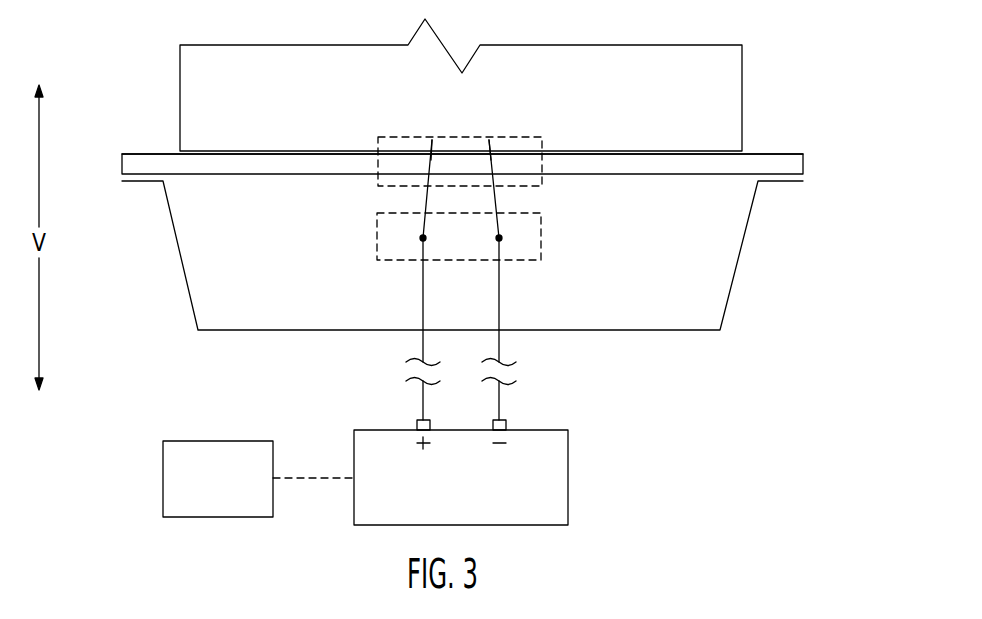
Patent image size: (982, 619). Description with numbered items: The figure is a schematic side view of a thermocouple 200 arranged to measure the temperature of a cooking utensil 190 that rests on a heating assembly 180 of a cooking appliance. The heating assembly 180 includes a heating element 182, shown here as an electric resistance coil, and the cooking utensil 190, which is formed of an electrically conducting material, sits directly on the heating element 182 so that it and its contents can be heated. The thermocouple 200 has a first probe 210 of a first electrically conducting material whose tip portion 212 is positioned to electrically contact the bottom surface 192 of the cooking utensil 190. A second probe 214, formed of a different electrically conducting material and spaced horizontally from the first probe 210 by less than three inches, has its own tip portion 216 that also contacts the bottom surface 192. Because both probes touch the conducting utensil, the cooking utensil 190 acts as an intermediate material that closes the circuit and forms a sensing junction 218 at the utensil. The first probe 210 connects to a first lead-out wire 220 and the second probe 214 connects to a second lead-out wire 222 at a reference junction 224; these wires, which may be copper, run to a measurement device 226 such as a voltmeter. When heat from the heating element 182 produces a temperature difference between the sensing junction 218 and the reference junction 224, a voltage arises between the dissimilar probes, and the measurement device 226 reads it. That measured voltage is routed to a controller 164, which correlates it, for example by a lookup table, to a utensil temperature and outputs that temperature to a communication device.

The controller 164 is at (235, 492).
The heating assembly 180 is at (146, 197).
The heating element 182 is at (147, 152).
The cooking utensil 190 is at (666, 62).
The bottom surface 192 is at (694, 158).
The thermocouple 200 is at (465, 255).
The first probe 210 is at (428, 205).
The tip portion 212 is at (430, 142).
The second probe 214 is at (494, 203).
The tip portion 216 is at (491, 142).
The sensing junction 218 is at (543, 143).
The first lead-out wire 220 is at (423, 294).
The second lead-out wire 222 is at (499, 272).
The reference junction 224 is at (377, 235).
The measurement device 226 is at (476, 492).